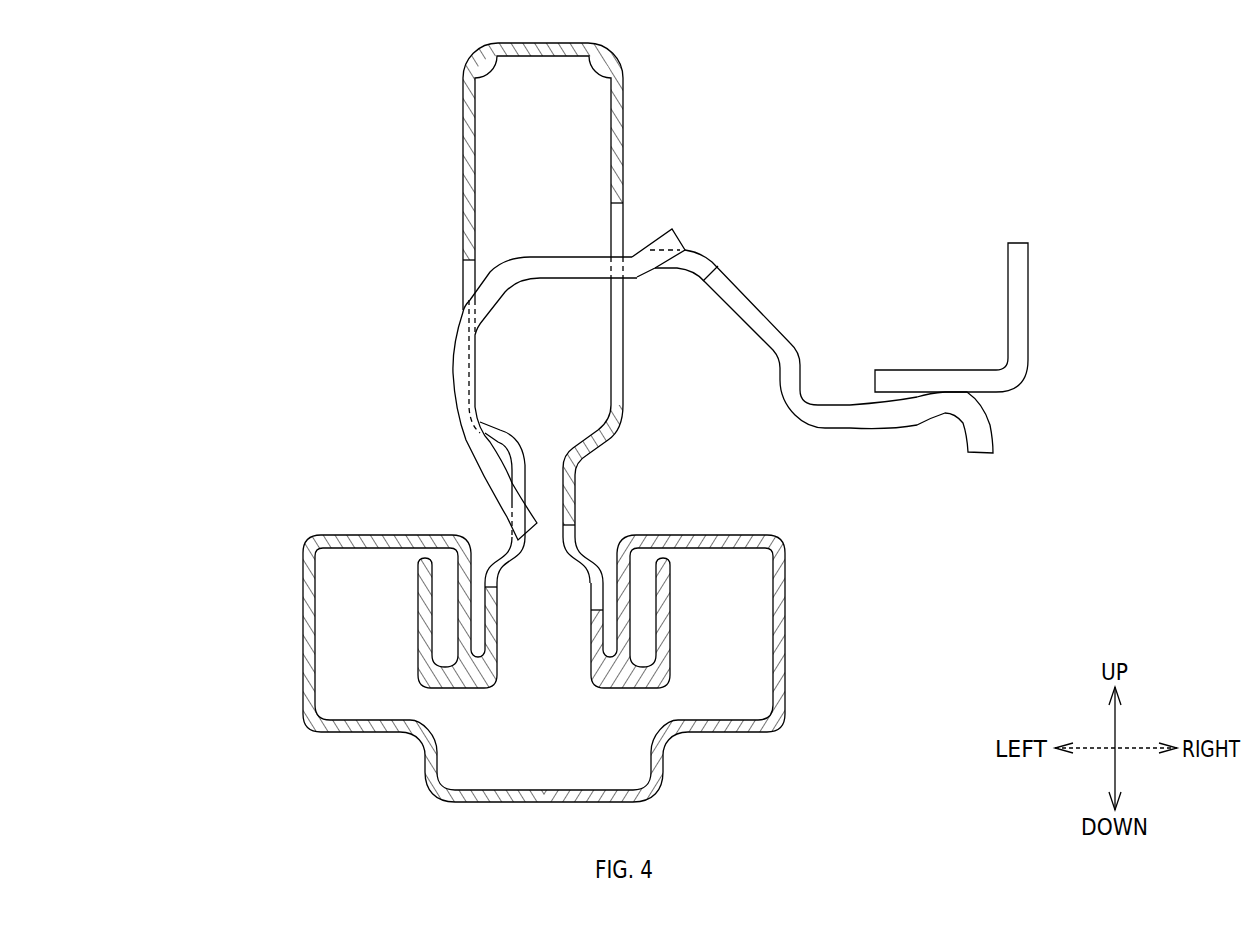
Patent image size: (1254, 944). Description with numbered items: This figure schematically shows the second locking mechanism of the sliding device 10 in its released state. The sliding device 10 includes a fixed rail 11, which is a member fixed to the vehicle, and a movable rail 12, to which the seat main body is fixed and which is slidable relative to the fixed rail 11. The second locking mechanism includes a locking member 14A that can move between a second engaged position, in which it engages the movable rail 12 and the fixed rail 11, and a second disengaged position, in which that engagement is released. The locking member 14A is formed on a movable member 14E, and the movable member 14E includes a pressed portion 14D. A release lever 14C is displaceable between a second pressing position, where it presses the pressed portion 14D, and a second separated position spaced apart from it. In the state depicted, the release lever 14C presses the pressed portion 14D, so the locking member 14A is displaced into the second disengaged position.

The sliding device 10 is at (277, 325).
The fixed rail 11 is at (303, 638).
The movable rail 12 is at (462, 162).
The locking member 14A is at (470, 455).
The release lever 14C is at (937, 370).
The pressed portion 14D is at (982, 398).
The movable member 14E is at (777, 387).